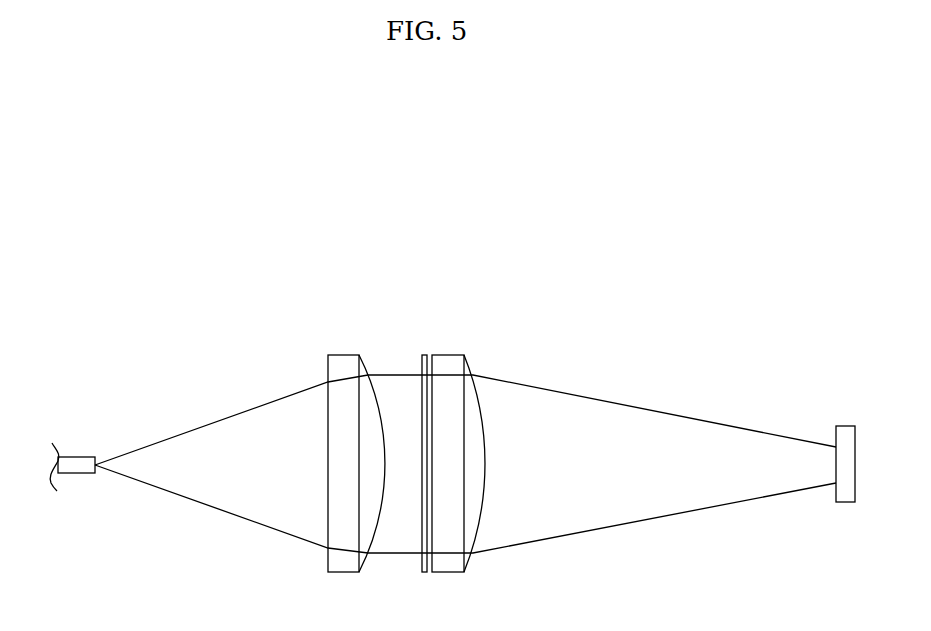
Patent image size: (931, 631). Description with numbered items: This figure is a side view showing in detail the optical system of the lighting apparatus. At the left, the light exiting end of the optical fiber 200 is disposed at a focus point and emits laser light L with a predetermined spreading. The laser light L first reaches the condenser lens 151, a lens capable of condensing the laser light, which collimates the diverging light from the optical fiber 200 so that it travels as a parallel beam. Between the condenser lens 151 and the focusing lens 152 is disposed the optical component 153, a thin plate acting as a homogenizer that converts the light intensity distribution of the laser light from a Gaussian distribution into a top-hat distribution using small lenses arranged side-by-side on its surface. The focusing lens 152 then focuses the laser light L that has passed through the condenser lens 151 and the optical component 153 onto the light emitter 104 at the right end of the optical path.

The optical fiber 200 is at (76, 457).
The laser light L is at (208, 420).
The condenser lens 151 is at (345, 355).
The optical component 153 is at (427, 355).
The focusing lens 152 is at (447, 355).
The light emitter 104 is at (845, 426).